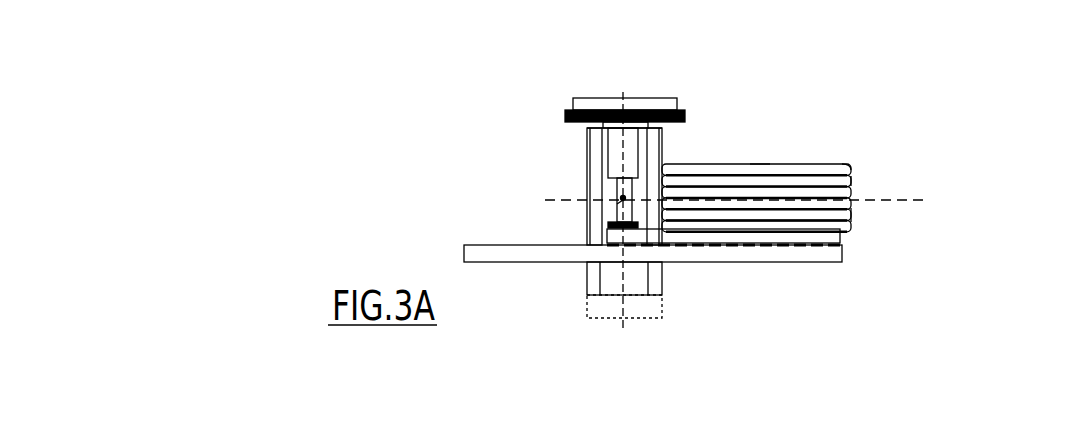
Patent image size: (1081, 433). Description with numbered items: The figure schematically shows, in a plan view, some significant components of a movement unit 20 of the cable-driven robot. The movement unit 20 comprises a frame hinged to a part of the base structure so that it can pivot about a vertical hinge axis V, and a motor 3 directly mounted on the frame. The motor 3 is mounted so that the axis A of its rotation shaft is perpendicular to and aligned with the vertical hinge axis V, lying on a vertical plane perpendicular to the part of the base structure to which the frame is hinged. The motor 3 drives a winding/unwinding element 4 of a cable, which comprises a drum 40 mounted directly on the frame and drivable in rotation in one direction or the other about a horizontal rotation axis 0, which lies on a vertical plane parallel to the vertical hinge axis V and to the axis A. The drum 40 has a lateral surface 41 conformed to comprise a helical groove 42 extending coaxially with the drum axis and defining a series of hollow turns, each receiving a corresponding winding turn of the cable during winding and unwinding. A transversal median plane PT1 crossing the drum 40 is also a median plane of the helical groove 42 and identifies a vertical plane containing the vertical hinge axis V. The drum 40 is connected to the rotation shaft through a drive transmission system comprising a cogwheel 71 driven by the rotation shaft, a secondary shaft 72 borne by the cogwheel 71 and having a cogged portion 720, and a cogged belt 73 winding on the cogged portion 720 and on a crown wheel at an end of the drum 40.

The cogwheel 71 is at (683, 95).
The movement unit 20 is at (721, 127).
The secondary shaft 72 is at (617, 182).
The cogged portion 720 is at (648, 246).
The cogged belt 73 is at (718, 236).
The motor 3 is at (578, 272).
The winding/unwinding element 4 is at (835, 151).
The horizontal rotation axis 0 is at (759, 156).
The drum 40 is at (842, 167).
The lateral surface 41 is at (867, 182).
The helical groove 42 is at (855, 212).
The transversal median plane PT1 is at (921, 205).
The vertical hinge axis V is at (617, 204).
The axis of the rotation shaft A is at (625, 303).